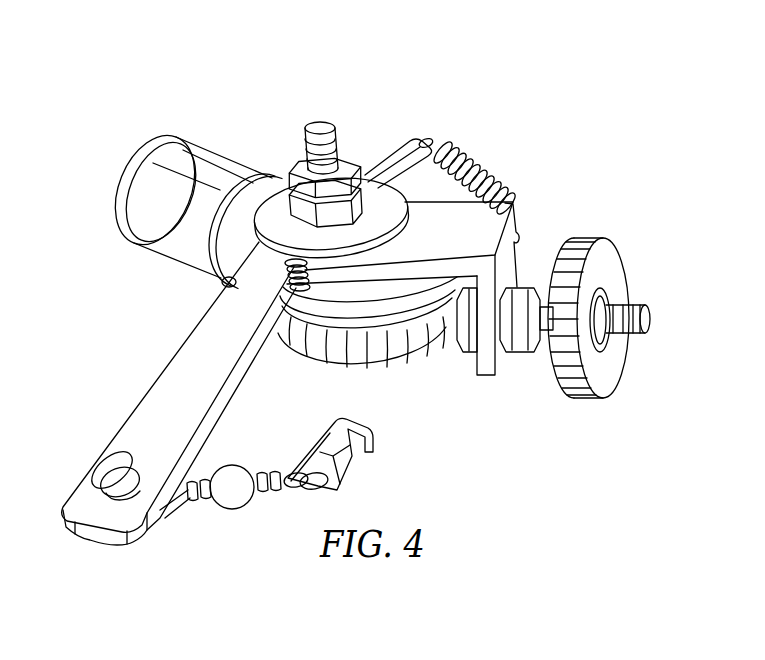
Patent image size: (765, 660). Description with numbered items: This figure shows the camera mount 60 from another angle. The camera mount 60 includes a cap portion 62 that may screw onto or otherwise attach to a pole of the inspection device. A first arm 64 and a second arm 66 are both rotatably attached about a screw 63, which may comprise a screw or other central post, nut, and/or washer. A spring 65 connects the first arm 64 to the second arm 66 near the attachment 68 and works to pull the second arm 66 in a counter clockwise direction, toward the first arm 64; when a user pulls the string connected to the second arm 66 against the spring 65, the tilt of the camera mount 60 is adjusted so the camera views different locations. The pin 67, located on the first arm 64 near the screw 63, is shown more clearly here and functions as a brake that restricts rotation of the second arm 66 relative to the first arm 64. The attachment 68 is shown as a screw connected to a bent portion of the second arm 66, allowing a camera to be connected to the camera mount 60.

The camera mount 60 is at (160, 43).
The cap portion 62 is at (157, 148).
The screw 63 is at (305, 123).
The first arm 64 is at (417, 143).
The spring 65 is at (487, 182).
The second arm 66 is at (147, 393).
The pin 67 is at (313, 280).
The attachment 68 is at (605, 377).